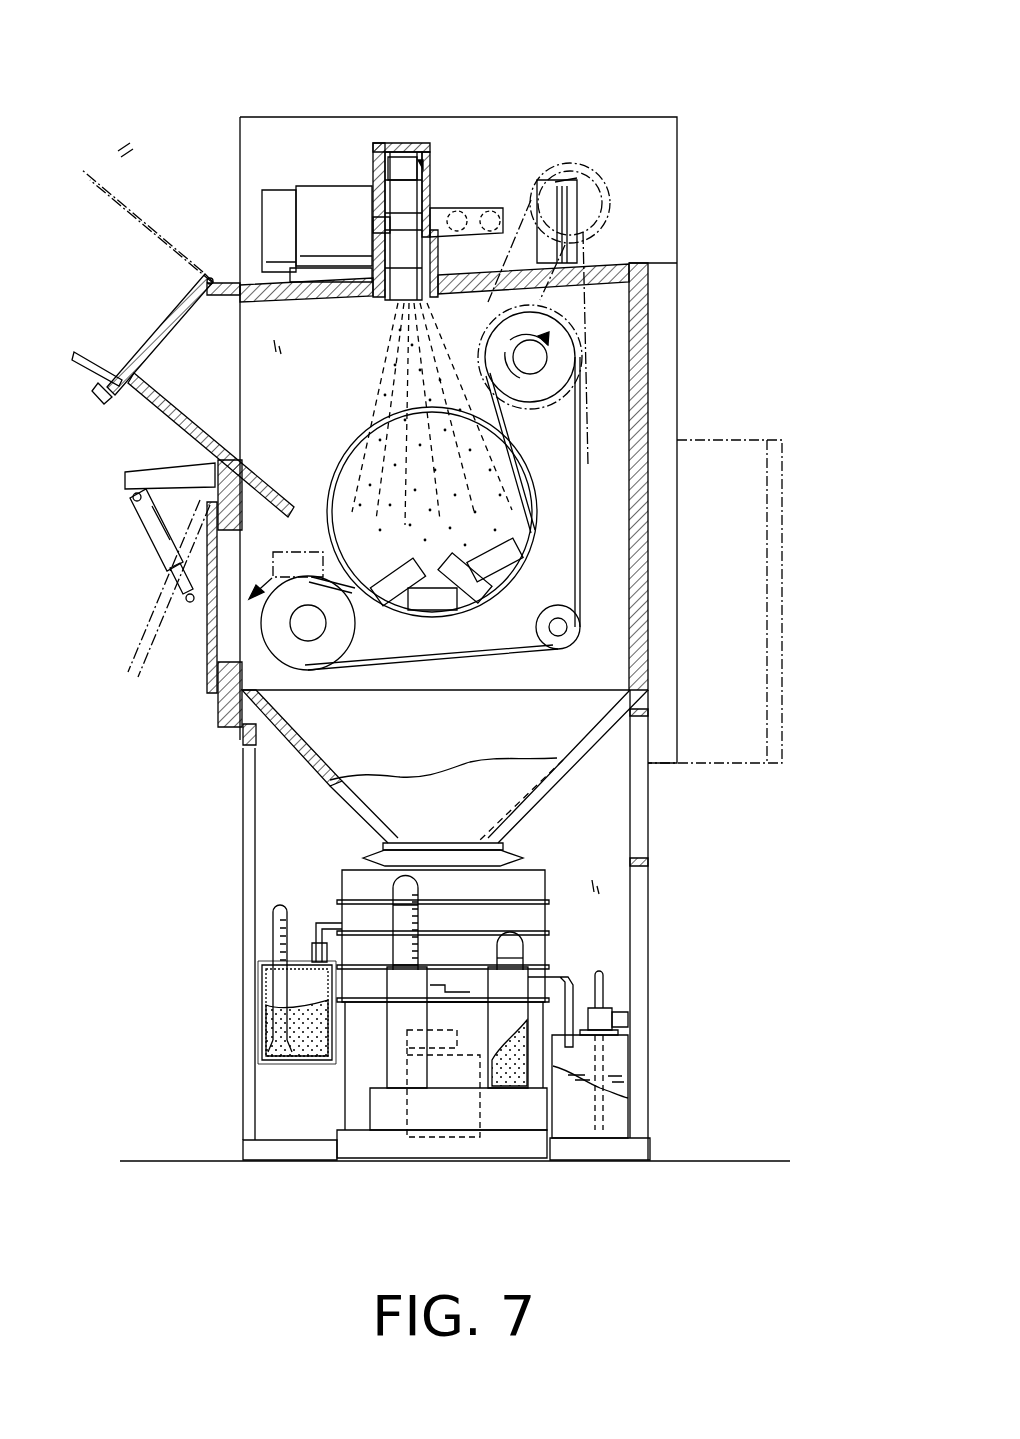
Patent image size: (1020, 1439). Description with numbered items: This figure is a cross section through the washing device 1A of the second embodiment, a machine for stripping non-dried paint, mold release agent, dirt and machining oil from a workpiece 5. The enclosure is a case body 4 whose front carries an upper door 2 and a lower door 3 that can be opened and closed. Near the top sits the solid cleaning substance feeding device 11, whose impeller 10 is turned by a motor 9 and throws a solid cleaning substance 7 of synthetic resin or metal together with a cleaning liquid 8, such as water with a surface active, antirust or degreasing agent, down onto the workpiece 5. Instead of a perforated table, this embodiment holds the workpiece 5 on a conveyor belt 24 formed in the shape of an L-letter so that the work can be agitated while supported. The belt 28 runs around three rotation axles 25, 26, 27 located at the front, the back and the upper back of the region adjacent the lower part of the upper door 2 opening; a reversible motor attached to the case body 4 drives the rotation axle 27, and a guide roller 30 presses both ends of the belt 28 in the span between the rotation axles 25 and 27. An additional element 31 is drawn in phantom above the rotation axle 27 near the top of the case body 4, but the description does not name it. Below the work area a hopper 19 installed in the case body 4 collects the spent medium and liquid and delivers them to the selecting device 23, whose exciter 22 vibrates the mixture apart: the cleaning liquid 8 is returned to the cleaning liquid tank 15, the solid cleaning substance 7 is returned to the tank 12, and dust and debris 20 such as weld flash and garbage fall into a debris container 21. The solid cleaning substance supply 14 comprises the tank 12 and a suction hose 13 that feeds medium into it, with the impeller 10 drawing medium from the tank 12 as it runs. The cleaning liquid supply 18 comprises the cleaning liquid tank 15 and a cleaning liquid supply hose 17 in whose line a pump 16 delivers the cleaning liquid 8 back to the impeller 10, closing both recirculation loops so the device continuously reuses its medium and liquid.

The washing device 1A is at (767, 86).
The door 2 is at (141, 216).
The door 3 is at (207, 672).
The case body 4 is at (648, 391).
The workpiece 5 is at (388, 576).
The solid cleaning substance 7 is at (380, 456).
The cleaning liquid 8 is at (378, 394).
The motor 9 is at (313, 208).
The impeller 10 is at (398, 165).
The solid cleaning substance feeding device 11 is at (424, 162).
The tank 12 is at (271, 1063).
The suction hose 13 is at (275, 1000).
The solid cleaning substance supply 14 is at (270, 948).
The cleaning liquid tank 15 is at (573, 1118).
The pump 16 is at (610, 1015).
The cleaning liquid supply hose 17 is at (606, 975).
The cleaning liquid supply 18 is at (628, 1020).
The hopper 19 is at (520, 815).
The dust and debris 20 is at (514, 1083).
The debris container 21 is at (527, 1023).
The exciter 22 is at (402, 1105).
The selecting device 23 is at (339, 863).
The conveyor belt 24 is at (508, 660).
The rotation axle 25 is at (316, 665).
The rotation axle 26 is at (567, 648).
The rotation axle 27 is at (552, 403).
The belt 28 is at (578, 546).
The guide roller 30 is at (333, 492).
The support post 31 is at (600, 203).